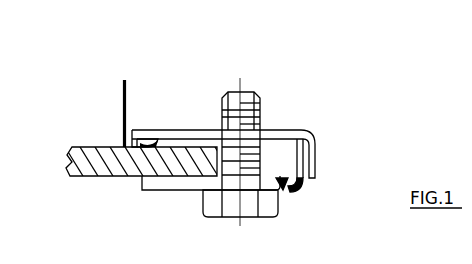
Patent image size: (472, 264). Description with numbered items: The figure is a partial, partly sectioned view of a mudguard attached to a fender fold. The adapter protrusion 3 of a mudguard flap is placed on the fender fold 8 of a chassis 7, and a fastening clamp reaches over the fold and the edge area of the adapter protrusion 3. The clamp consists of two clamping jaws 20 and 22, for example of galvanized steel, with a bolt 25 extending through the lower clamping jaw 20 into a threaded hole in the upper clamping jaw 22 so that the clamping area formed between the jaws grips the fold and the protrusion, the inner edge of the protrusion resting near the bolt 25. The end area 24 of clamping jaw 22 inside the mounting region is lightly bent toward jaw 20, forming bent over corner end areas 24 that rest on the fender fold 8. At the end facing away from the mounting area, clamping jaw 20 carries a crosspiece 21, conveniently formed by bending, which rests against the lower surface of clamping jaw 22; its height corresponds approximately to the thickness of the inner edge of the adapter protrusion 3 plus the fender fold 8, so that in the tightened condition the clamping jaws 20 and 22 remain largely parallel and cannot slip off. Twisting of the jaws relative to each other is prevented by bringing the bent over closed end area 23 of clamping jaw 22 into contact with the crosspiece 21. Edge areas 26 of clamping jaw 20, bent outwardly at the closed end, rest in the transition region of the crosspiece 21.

The adapter protrusion 3 is at (95, 178).
The chassis 7 is at (123, 110).
The fender fold 8 is at (155, 145).
The clamping jaw 20 is at (180, 182).
The crosspiece 21 is at (294, 176).
The clamping jaw 22 is at (280, 132).
The bent over closed end area 23 is at (305, 155).
The end area 24 is at (137, 130).
The bolt 25 is at (233, 205).
The edge areas 26 is at (282, 190).